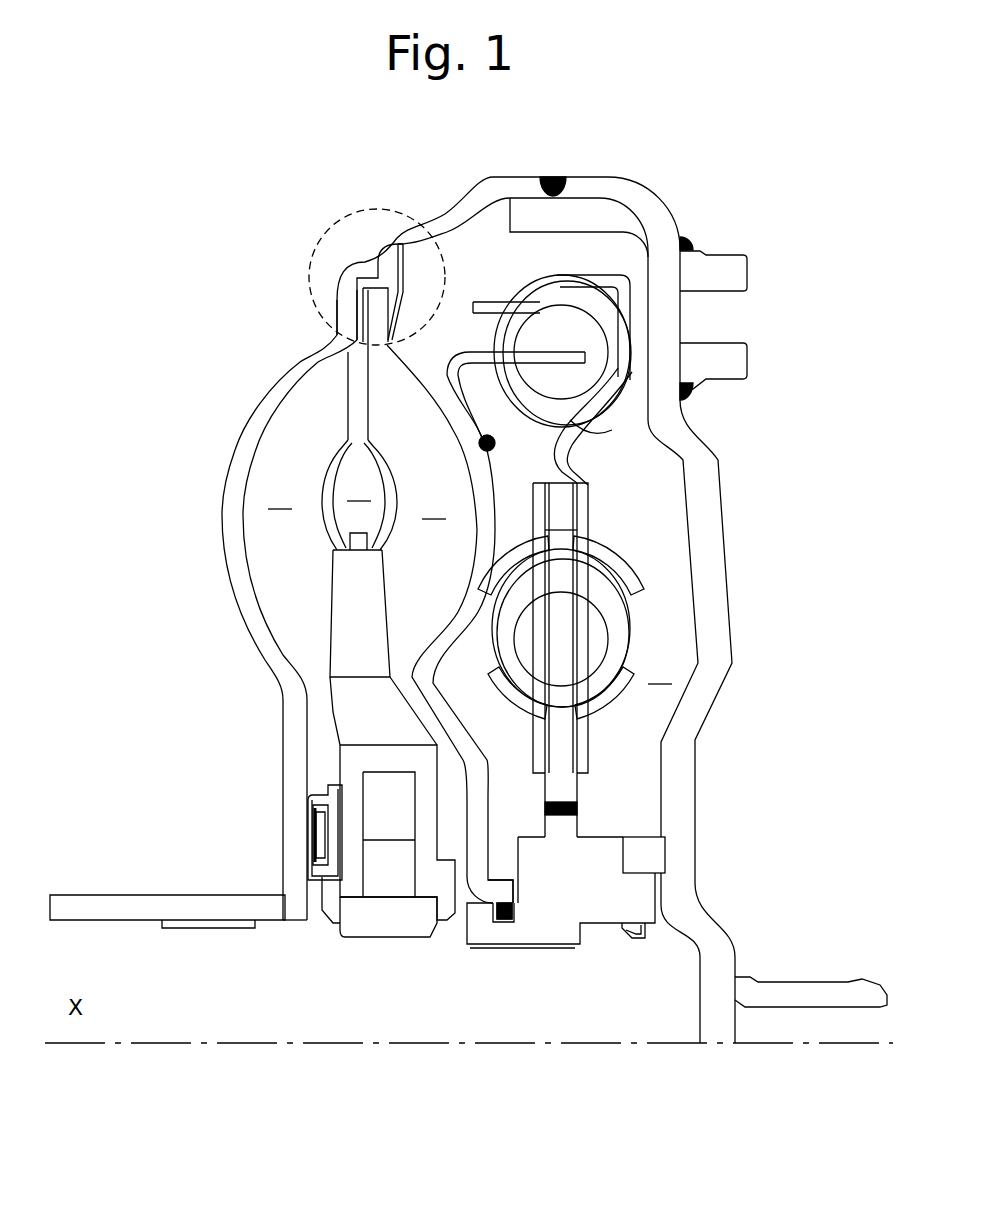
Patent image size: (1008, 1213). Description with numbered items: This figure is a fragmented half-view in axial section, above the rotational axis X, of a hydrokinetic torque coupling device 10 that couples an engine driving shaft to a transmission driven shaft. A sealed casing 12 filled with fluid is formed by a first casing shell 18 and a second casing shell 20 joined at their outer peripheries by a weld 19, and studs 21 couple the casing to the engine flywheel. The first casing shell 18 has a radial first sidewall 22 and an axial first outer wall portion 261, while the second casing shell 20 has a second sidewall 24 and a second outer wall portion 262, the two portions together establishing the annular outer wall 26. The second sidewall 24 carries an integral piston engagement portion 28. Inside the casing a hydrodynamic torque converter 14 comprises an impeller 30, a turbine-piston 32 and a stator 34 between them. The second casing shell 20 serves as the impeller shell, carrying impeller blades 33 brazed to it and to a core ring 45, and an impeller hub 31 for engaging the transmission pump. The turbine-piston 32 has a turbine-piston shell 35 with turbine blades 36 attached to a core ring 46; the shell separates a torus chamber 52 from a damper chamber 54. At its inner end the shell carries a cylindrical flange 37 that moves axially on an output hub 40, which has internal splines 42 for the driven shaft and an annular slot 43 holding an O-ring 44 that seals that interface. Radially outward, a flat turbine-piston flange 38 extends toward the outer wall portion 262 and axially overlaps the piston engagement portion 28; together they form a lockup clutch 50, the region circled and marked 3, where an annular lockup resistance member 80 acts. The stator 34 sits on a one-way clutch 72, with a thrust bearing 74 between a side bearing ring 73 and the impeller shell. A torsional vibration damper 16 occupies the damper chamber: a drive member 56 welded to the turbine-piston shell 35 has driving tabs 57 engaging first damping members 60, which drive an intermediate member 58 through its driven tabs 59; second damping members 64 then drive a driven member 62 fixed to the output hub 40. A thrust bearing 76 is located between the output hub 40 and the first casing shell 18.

The detail region 3 is at (327, 230).
The hydrokinetic torque coupling device 10 is at (752, 206).
The sealed casing 12 is at (658, 209).
The hydrodynamic torque converter 14 is at (223, 451).
The torsional vibration damper 16 is at (604, 451).
The first casing shell 18 is at (732, 572).
The weld 19 is at (552, 173).
The second casing shell 20 is at (220, 557).
The studs 21 is at (733, 275).
The first sidewall 22 is at (673, 323).
The second sidewall 24 is at (230, 517).
The annular outer wall 26 is at (506, 171).
The first outer wall portion 261 is at (603, 209).
The second outer wall portion 262 is at (467, 197).
The piston engagement portion 28 is at (347, 310).
The impeller 30 is at (250, 567).
The impeller hub 31 is at (90, 895).
The turbine-piston 32 is at (463, 567).
The impeller blades 33 is at (282, 497).
The stator 34 is at (326, 643).
The turbine-piston shell 35 is at (455, 625).
The turbine blades 36 is at (436, 507).
The substantially cylindrical flange 37 is at (500, 888).
The turbine-piston flange 38 is at (380, 327).
The output hub 40 is at (594, 896).
The internal splines 42 is at (548, 948).
The annular slot 43 is at (503, 922).
The O-ring 44 is at (504, 911).
The core ring 45 is at (335, 462).
The core ring 46 is at (388, 478).
The lockup clutch 50 is at (402, 311).
The first chamber 52 is at (359, 446).
The second chamber 54 is at (662, 672).
The drive member 56 is at (470, 409).
The driving tabs 57 is at (576, 363).
The intermediate member 58 is at (585, 521).
The driven tabs 59 is at (490, 306).
The first circumferential damping members 60 is at (610, 408).
The driven member 62 is at (567, 790).
The second circumferential damping members 64 is at (628, 635).
The one-way clutch 72 is at (380, 800).
The side bearing ring 73 is at (333, 792).
The thrust bearing 74 is at (313, 840).
The thrust bearing 76 is at (652, 855).
The annular lockup resistance member 80 is at (410, 263).